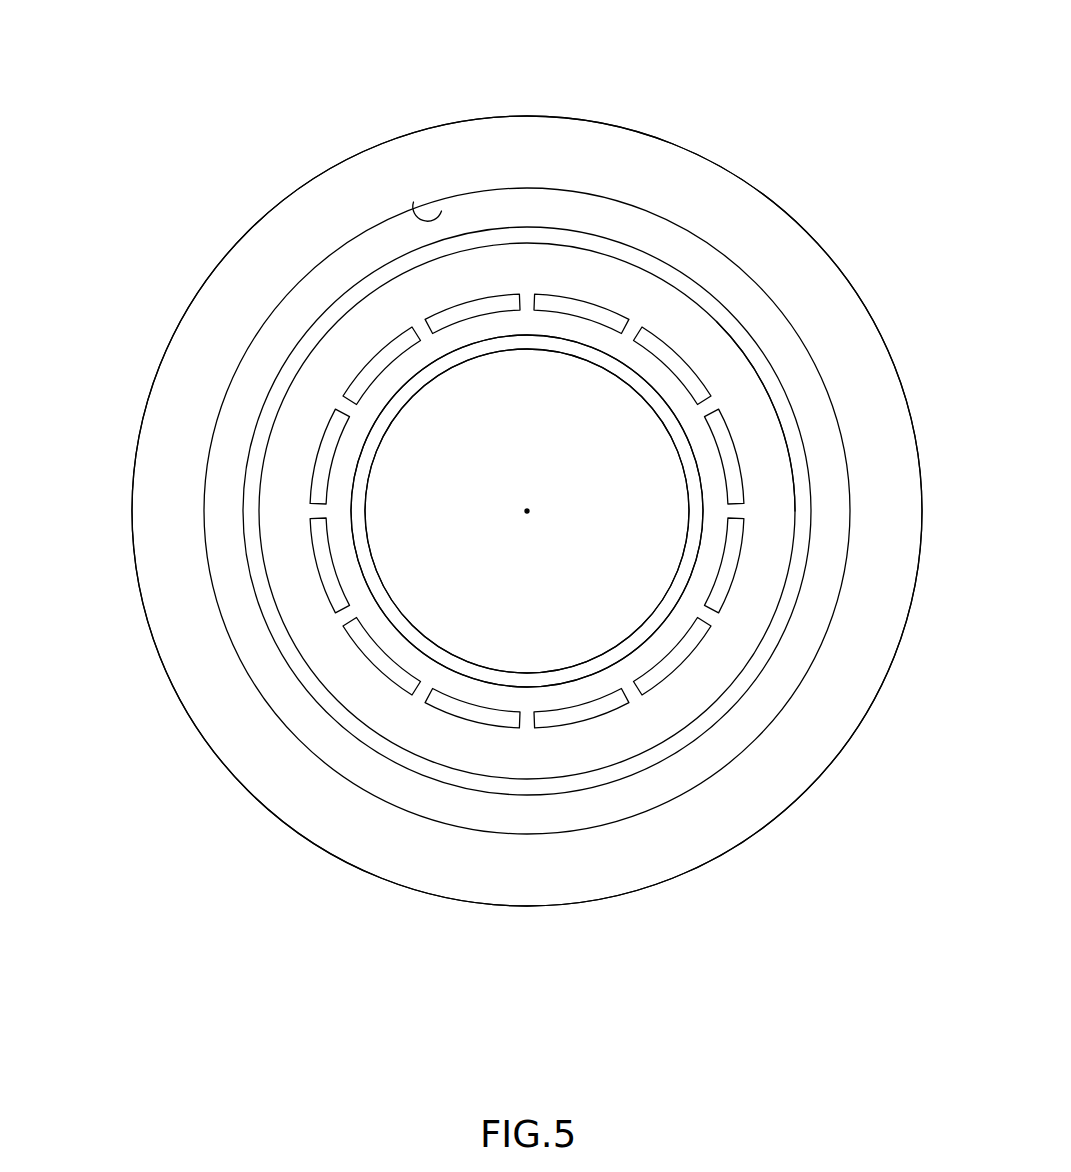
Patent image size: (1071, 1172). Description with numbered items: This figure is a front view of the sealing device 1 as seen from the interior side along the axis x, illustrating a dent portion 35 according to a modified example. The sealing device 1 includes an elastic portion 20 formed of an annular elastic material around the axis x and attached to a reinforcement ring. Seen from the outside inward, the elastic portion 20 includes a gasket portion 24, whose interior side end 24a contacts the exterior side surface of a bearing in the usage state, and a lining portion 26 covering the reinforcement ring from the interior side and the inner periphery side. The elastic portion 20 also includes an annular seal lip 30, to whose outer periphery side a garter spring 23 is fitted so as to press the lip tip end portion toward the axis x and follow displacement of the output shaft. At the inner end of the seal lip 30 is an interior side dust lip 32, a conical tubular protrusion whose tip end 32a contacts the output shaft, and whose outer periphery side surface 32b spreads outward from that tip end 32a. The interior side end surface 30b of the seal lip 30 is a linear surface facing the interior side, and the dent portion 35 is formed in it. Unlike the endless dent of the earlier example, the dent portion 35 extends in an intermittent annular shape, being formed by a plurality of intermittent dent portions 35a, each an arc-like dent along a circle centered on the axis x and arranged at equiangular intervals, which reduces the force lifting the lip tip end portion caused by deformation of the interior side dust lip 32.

The sealing device 1 is at (540, 971).
The elastic portion 20 is at (306, 120).
The garter spring 23 is at (692, 287).
The gasket portion 24 is at (510, 115).
The interior side end 24a is at (553, 147).
The lining portion 26 is at (413, 212).
The seal lip 30 is at (298, 545).
The interior side end surface 30b is at (752, 437).
The interior side dust lip 32 is at (685, 477).
The tip end 32a is at (697, 512).
The outer periphery side surface 32b is at (717, 532).
The dent portion 35 is at (527, 511).
The intermittent dent portion 35a is at (383, 358).
The axis X is at (527, 510).